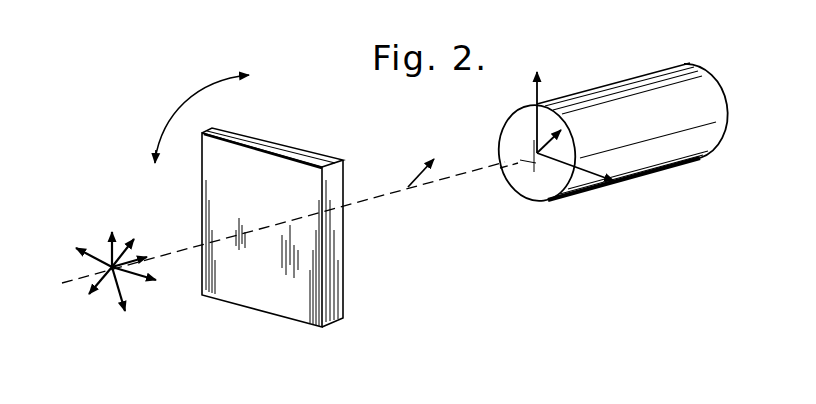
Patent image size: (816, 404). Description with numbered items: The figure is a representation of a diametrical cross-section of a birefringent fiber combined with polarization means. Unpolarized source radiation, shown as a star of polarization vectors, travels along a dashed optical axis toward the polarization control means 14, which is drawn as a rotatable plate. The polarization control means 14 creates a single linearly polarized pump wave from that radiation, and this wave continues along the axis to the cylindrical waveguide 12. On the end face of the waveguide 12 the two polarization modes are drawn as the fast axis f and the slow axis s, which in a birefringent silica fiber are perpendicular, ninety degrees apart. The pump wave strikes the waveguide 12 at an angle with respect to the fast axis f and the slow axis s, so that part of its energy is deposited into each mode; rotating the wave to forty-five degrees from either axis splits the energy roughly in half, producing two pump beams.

The waveguide 12 is at (610, 108).
The polarization control means 14 is at (255, 142).
The fast axis f is at (525, 112).
The slow axis s is at (575, 167).